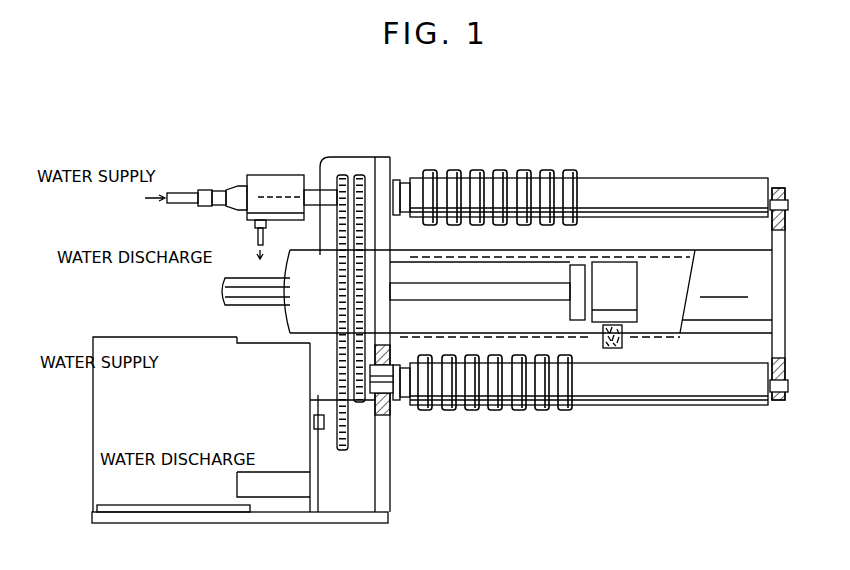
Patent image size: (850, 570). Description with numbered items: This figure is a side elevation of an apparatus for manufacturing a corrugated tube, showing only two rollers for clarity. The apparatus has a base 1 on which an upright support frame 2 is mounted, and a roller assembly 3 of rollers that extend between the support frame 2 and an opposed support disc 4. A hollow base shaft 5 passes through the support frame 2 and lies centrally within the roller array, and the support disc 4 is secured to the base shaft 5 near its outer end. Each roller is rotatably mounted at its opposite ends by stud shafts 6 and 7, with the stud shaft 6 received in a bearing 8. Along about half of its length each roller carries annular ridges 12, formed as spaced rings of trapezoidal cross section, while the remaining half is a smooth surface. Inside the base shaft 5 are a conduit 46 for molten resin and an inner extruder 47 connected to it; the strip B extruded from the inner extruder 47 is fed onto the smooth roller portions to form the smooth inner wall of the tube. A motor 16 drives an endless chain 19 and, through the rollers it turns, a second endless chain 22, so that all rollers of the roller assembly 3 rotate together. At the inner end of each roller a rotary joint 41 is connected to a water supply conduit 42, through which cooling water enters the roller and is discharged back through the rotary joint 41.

The base 1 is at (366, 523).
The support frame 2 is at (390, 494).
The roller assembly 3 is at (485, 162).
The support disc 4 is at (772, 320).
The base shaft 5 is at (762, 268).
The stud shaft 6 is at (370, 404).
The stud shaft 7 is at (788, 206).
The bearing 8 is at (388, 406).
The annular ridges 12 is at (494, 418).
The motor 16 is at (183, 337).
The endless chain 19 is at (360, 175).
The second endless chain 22 is at (342, 175).
The rotary joint 41 is at (270, 178).
The water supply conduit 42 is at (182, 204).
The conduit 46 is at (272, 282).
The inner extruder 47 is at (637, 312).
The strip of synthetic resin material B is at (623, 340).